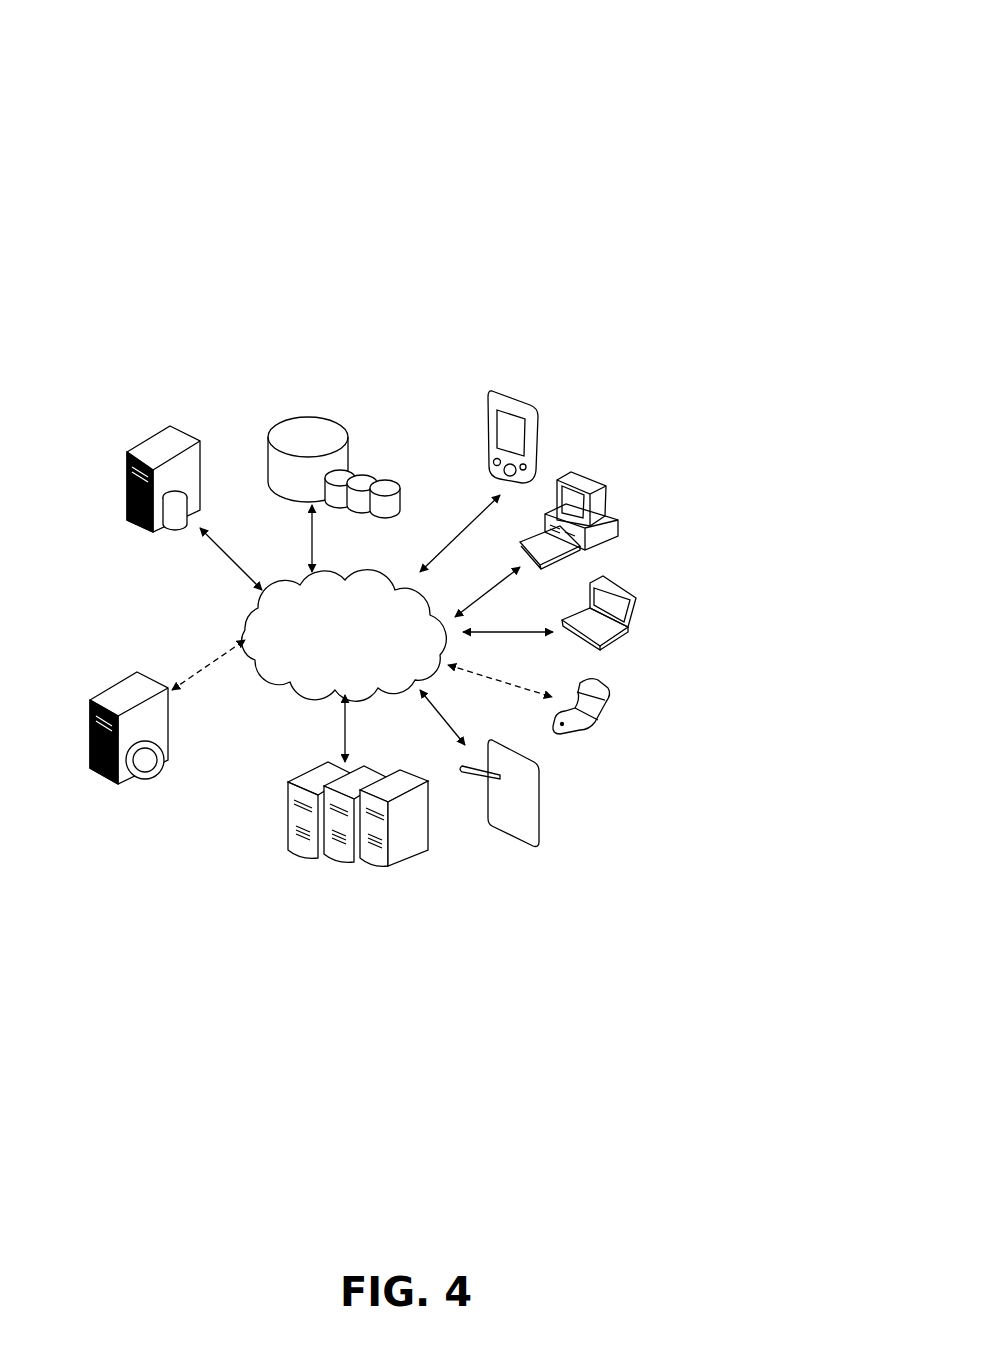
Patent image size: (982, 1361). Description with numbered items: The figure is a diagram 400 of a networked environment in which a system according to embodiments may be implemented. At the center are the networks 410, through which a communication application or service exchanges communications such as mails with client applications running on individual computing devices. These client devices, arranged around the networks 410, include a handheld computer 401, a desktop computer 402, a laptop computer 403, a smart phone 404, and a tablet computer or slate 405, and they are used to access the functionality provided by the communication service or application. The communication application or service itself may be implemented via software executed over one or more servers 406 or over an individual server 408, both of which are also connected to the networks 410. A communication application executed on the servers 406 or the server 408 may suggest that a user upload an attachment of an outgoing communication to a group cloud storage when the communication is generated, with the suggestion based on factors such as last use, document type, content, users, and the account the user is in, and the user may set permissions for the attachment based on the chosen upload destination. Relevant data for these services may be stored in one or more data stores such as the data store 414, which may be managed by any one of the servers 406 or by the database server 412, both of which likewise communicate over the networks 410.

The diagram 400 is at (657, 36).
The handheld computer 401 is at (540, 395).
The desktop computer 402 is at (615, 478).
The laptop computer 403 is at (633, 578).
The smart phone 404 is at (608, 680).
The tablet computer 405 is at (550, 778).
The servers 406 is at (312, 762).
The individual server 408 is at (110, 680).
The networks 410 is at (347, 563).
The database server 412 is at (172, 538).
The data store 414 is at (320, 392).